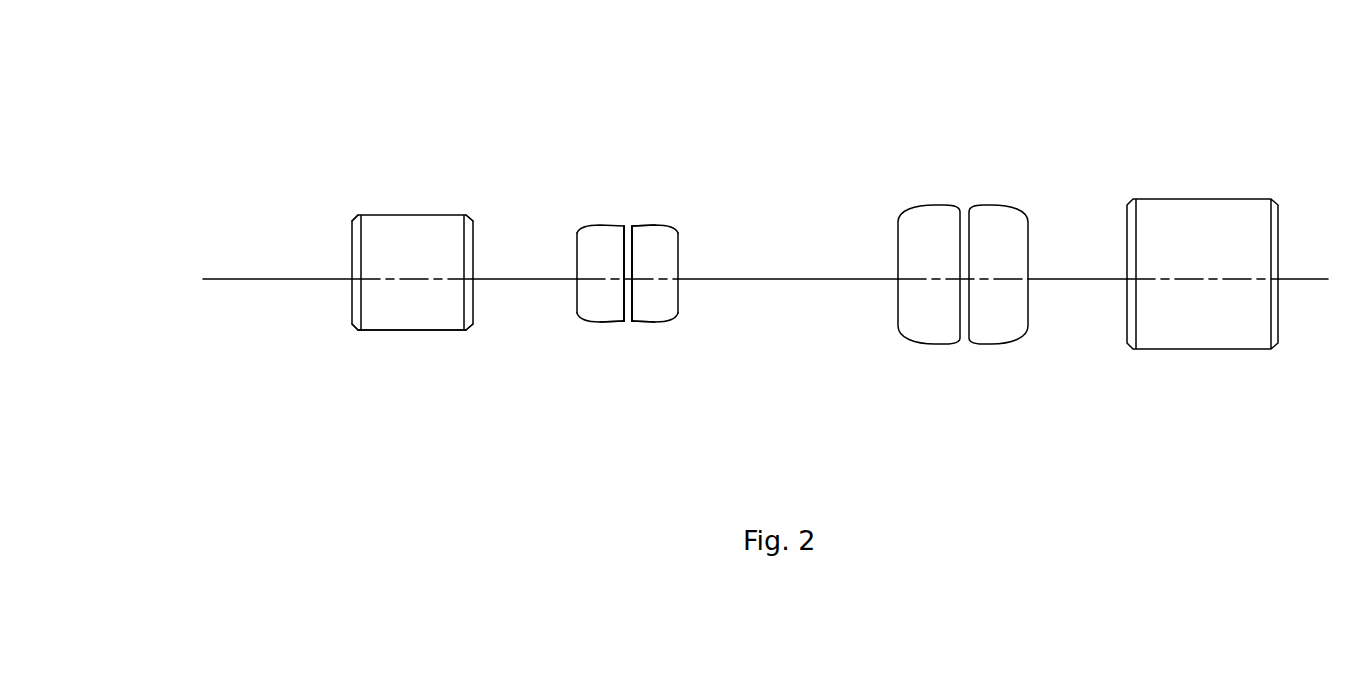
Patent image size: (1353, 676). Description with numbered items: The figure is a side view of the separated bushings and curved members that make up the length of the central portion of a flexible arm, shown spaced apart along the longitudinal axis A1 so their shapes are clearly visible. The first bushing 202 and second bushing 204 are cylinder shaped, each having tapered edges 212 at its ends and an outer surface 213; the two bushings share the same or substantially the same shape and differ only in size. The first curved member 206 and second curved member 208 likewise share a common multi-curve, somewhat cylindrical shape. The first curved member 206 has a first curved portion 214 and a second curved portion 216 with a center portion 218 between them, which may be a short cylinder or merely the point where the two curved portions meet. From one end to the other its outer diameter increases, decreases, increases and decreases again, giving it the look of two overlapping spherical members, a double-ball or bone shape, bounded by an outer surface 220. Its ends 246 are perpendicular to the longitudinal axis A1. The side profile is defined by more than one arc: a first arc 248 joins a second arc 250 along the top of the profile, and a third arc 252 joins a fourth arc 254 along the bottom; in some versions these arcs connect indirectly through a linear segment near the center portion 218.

The longitudinal axis A1 is at (735, 277).
The first bushing 202 is at (431, 177).
The second bushing 204 is at (1222, 149).
The first curved member 206 is at (644, 176).
The second curved member 208 is at (981, 147).
The tapered edges 212 is at (353, 331).
The outer surface 213 is at (358, 436).
The first curved portion 214 is at (600, 311).
The second curved portion 216 is at (663, 313).
The center portion 218 is at (627, 315).
The outer surface 220 is at (660, 227).
The ends 246 is at (570, 233).
The first arc 248 is at (600, 226).
The second arc 250 is at (650, 234).
The third arc 252 is at (586, 312).
The fourth arc 254 is at (655, 318).